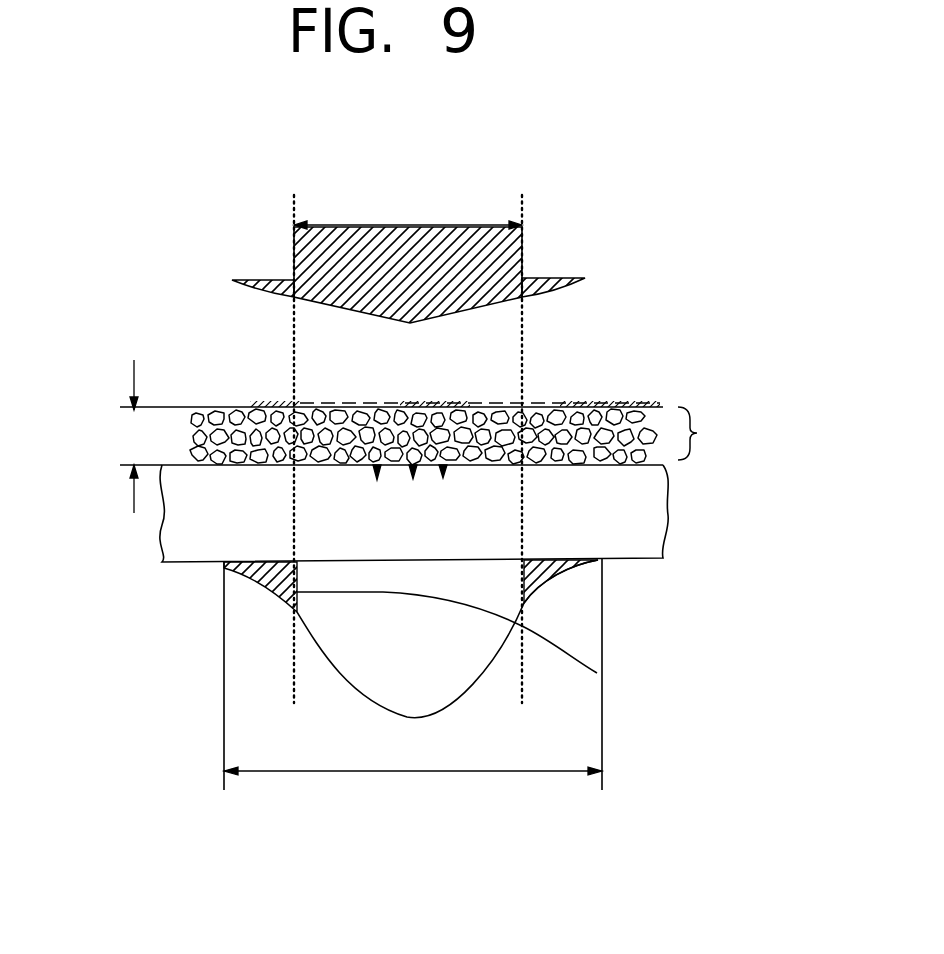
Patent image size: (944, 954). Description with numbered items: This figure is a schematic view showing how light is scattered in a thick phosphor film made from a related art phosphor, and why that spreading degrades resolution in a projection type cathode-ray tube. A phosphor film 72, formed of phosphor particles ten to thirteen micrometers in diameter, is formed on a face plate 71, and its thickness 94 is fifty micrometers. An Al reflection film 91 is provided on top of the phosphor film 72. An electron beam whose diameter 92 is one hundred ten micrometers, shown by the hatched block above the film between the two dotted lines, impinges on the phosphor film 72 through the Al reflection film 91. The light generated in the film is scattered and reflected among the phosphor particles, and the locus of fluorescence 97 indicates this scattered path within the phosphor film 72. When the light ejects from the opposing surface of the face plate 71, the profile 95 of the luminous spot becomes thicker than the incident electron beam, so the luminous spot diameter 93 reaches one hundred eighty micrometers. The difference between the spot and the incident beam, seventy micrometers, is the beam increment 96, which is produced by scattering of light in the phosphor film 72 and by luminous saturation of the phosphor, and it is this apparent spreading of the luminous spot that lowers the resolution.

The electron beam diameter 92 is at (377, 225).
The Al reflection film 91 is at (353, 408).
The phosphor film 72 is at (700, 433).
The thickness of the phosphor film 94 is at (130, 431).
The locus of fluorescence 97 is at (427, 460).
The face plate 71 is at (638, 532).
The luminous spot diameter 93 is at (333, 773).
The profile of a luminous spot 95 is at (463, 702).
The beam increment 96 is at (597, 673).